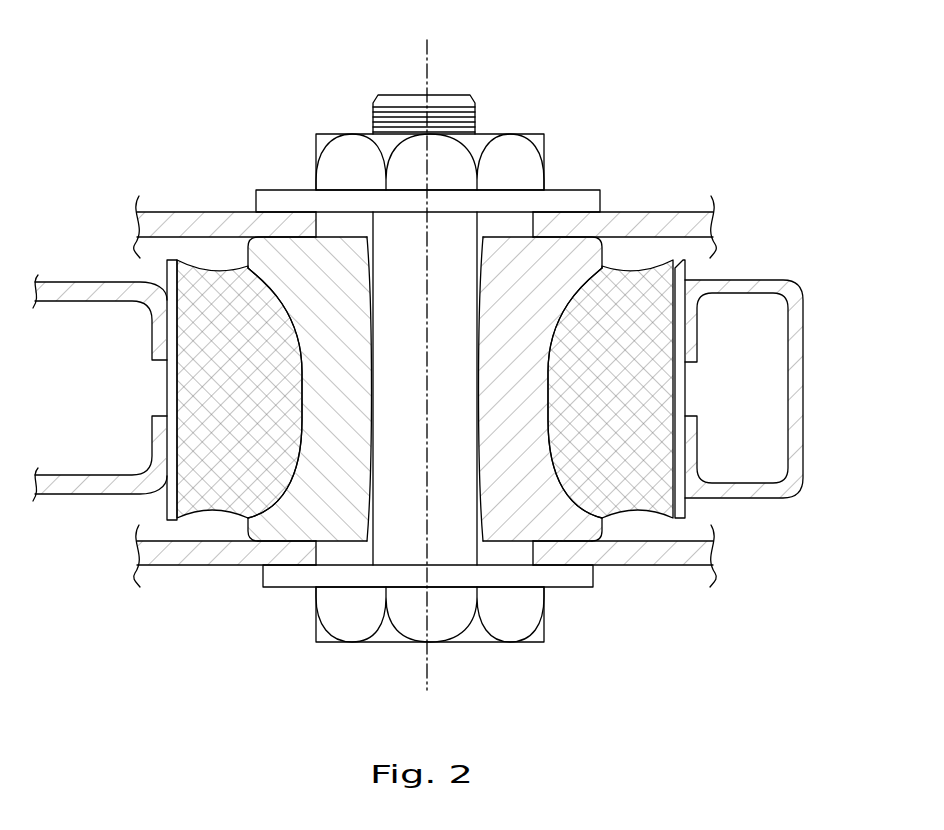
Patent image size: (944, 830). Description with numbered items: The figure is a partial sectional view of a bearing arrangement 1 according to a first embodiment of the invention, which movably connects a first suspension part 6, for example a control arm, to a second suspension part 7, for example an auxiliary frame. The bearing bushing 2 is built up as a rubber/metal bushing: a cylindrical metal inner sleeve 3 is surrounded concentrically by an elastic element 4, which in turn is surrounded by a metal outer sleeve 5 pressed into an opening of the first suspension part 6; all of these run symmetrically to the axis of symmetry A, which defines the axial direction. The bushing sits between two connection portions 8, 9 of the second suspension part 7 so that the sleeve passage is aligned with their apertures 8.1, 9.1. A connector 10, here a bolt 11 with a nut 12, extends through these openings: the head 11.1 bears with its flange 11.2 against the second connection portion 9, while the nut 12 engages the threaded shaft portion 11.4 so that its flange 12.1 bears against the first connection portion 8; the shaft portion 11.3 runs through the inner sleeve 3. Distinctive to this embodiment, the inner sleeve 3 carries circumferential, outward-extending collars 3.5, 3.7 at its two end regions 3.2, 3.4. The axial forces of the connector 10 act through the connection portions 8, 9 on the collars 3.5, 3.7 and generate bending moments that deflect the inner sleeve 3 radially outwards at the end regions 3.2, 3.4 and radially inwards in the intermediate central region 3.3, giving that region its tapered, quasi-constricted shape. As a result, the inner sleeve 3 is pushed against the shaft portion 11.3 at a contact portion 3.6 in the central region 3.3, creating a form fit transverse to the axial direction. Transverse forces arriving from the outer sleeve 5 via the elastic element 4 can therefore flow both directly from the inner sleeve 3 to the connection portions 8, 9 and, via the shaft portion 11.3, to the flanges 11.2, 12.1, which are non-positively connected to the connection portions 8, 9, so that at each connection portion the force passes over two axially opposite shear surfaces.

The bearing arrangement 1 is at (745, 160).
The bearing bushing 2 is at (684, 245).
The inner sleeve 3 is at (526, 419).
The end region 3.2 is at (337, 230).
The intermediate central region 3.3 is at (300, 370).
The end region 3.4 is at (277, 543).
The collar 3.5 is at (245, 255).
The contact portion 3.6 is at (376, 428).
The collar 3.7 is at (240, 528).
The elastic element 4 is at (245, 419).
The outer sleeve 5 is at (686, 496).
The first suspension part 6 is at (83, 483).
The second suspension part 7 is at (152, 199).
The first connection portion 8 is at (671, 220).
The aperture 8.1 is at (498, 207).
The second connection portion 9 is at (657, 560).
The aperture 9.1 is at (350, 548).
The connector 10 is at (297, 142).
The bolt 11 is at (413, 419).
The head 11.1 is at (545, 643).
The flange 11.2 is at (293, 587).
The shaft portion 11.3 is at (483, 537).
The threaded shaft portion 11.4 is at (477, 117).
The nut 12 is at (500, 245).
The flange 12.1 is at (260, 183).
The axis of symmetry A is at (428, 348).